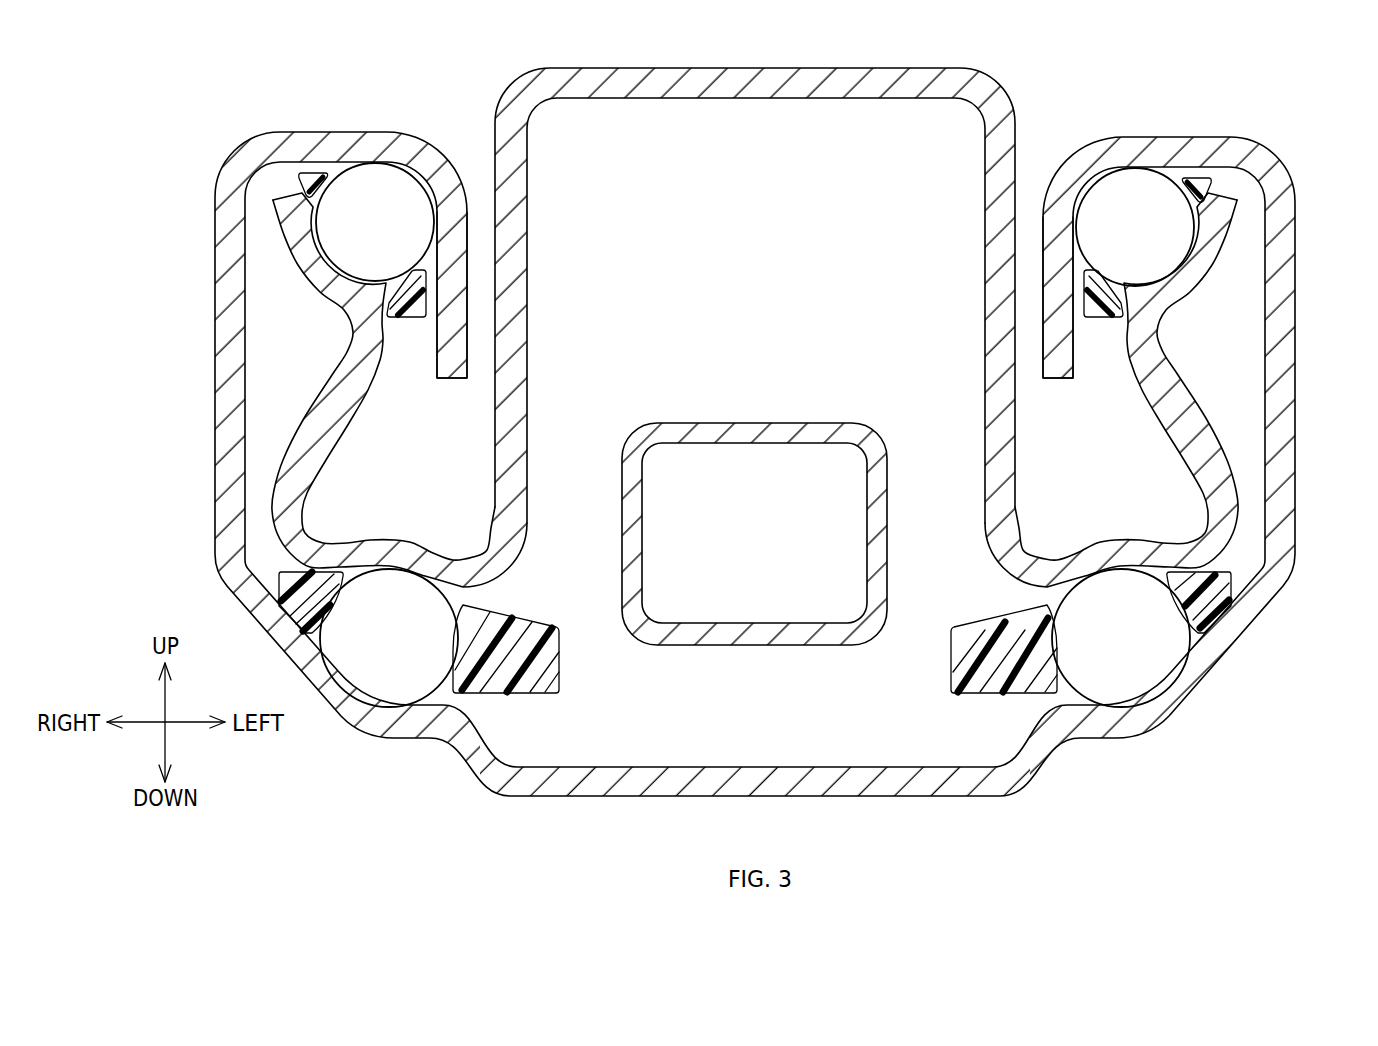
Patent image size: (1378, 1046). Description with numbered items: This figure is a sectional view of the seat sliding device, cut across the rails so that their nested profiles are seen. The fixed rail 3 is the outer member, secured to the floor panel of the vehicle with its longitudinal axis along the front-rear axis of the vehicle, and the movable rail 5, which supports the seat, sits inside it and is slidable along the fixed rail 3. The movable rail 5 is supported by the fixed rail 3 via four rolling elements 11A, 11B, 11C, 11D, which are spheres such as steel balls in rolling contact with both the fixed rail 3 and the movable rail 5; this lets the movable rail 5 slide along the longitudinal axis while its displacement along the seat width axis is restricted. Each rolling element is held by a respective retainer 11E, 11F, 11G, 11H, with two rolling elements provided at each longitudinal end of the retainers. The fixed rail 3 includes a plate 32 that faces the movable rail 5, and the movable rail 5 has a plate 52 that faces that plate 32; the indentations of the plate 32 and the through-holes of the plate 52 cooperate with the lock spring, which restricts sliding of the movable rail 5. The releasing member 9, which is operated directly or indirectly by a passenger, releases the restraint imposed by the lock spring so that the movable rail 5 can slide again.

The fixed rail 3 is at (1230, 672).
The movable rail 5 is at (1012, 102).
The releasing member 9 is at (663, 643).
The rolling element 11A is at (1133, 672).
The rolling element 11B is at (373, 667).
The rolling element 11C is at (1135, 197).
The rolling element 11D is at (367, 187).
The retainer 11E is at (1000, 700).
The retainer 11F is at (507, 693).
The retainer 11G is at (1197, 185).
The retainer 11H is at (311, 168).
The plate 32 is at (467, 248).
The plate 52 is at (493, 345).